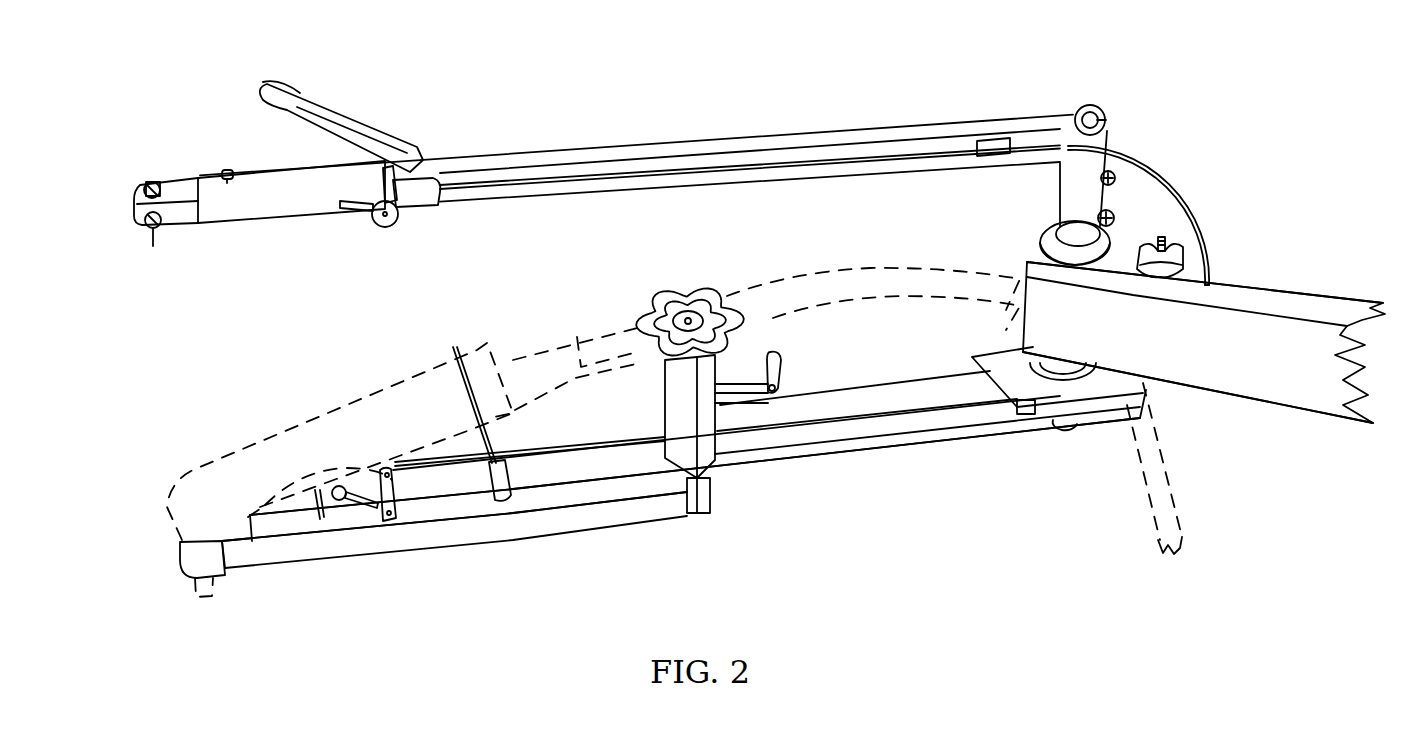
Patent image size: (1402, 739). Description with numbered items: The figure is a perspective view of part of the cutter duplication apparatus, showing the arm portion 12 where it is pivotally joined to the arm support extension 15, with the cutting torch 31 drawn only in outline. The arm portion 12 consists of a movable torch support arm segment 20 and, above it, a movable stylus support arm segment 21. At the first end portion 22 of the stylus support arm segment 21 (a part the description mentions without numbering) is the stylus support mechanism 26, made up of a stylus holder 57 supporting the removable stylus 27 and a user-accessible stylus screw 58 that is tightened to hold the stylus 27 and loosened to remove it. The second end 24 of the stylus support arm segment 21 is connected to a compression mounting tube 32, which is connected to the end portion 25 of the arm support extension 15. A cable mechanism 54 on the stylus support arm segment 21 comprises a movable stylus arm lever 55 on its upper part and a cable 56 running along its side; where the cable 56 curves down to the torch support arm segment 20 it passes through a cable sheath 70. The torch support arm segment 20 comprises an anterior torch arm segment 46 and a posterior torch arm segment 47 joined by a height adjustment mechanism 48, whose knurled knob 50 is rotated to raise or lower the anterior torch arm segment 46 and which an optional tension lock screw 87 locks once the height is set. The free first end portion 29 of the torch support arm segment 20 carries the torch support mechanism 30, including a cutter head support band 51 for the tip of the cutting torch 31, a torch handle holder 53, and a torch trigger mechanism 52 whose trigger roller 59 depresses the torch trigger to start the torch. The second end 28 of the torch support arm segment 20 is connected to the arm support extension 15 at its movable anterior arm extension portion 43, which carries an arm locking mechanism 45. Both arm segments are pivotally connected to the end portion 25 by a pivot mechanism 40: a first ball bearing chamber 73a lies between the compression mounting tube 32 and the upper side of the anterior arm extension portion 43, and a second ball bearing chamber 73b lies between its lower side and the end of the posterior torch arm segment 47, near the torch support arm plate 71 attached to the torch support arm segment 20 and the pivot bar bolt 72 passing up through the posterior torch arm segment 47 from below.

The arm portion 12 is at (1098, 101).
The arm support extension 15 is at (1292, 278).
The torch support arm segment 20 is at (888, 432).
The stylus support arm segment 21 is at (606, 140).
The handle 22 is at (257, 205).
The second end of the stylus support arm segment 24 is at (1005, 128).
The end portion of the arm support extension 25 is at (1204, 342).
The stylus support mechanism 26 is at (157, 175).
The stylus 27 is at (152, 246).
The second end of the torch support arm segment 28 is at (1047, 420).
The first end portion of the torch support arm segment 29 is at (351, 537).
The torch support mechanism 30 is at (320, 417).
The cutting torch 31 is at (320, 476).
The compression mounting tube 32 is at (1075, 192).
The pivot mechanism 40 is at (1117, 237).
The anterior arm extension portion 43 is at (1265, 378).
The arm locking mechanism 45 is at (1183, 250).
The anterior torch arm segment 46 is at (502, 525).
The posterior torch arm segment 47 is at (757, 458).
The height adjustment mechanism 48 is at (664, 398).
The knurled knob 50 is at (655, 292).
The cutter head support band 51 is at (178, 560).
The torch trigger mechanism 52 is at (390, 518).
The torch handle holder 53 is at (455, 350).
The cable mechanism 54 is at (421, 140).
The stylus arm lever 55 is at (328, 118).
The cable 56 is at (470, 188).
The stylus holder 57 is at (143, 188).
The stylus screw 58 is at (143, 221).
The trigger roller 59 is at (353, 503).
The cable sheath 70 is at (1140, 168).
The torch support arm plate 71 is at (1017, 382).
The pivot bar bolt 72 is at (1072, 427).
The first ball bearing chamber 73a is at (1050, 250).
The second ball bearing chamber 73b is at (1022, 350).
The tension lock screw 87 is at (751, 383).